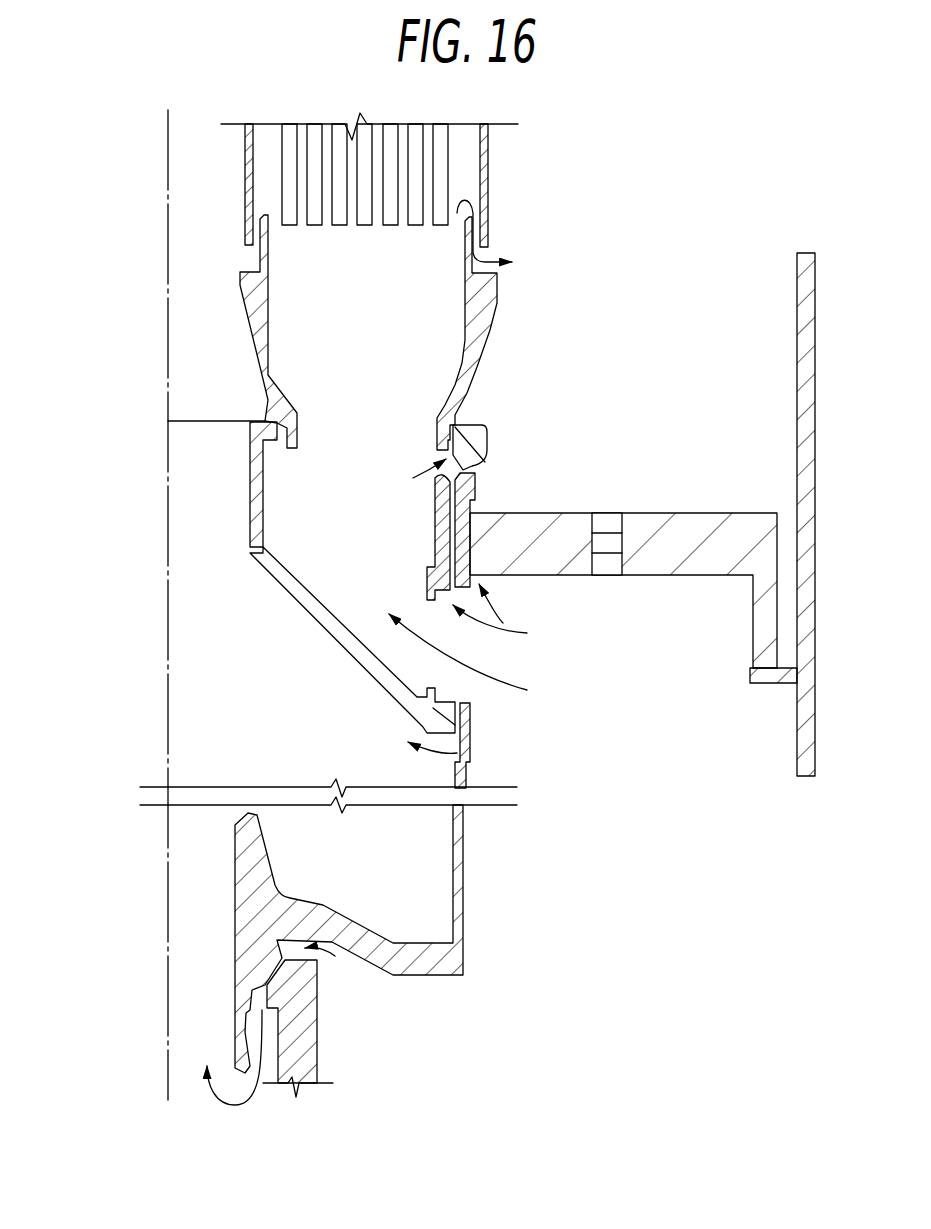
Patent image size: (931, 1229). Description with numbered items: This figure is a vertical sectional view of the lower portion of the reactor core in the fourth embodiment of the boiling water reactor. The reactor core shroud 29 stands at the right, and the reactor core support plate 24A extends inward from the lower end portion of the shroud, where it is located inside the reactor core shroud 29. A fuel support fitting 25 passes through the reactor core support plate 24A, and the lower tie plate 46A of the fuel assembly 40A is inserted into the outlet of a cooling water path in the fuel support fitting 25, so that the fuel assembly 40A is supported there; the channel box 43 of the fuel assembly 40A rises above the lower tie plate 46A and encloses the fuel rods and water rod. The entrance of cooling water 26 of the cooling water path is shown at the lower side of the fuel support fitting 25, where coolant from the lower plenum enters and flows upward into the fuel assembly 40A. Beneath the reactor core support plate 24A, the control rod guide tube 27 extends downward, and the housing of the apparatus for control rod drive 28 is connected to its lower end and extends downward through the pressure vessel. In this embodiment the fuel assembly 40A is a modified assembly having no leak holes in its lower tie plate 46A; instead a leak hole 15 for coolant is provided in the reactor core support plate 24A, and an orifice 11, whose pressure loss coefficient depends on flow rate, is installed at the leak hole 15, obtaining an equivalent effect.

The fuel assembly 40A is at (232, 193).
The channel box 43 is at (489, 162).
The lower tie plate 46A is at (487, 281).
The fuel support fitting 25 is at (475, 440).
The reactor core support plate 24A is at (633, 569).
The leak hole 15 is at (617, 522).
The orifice 11 is at (610, 550).
The entrance of cooling water 26 is at (423, 612).
The control rod guide tube 27 is at (470, 731).
The housing of apparatus for control rod drive 28 is at (307, 1022).
The reactor core shroud 29 is at (803, 338).